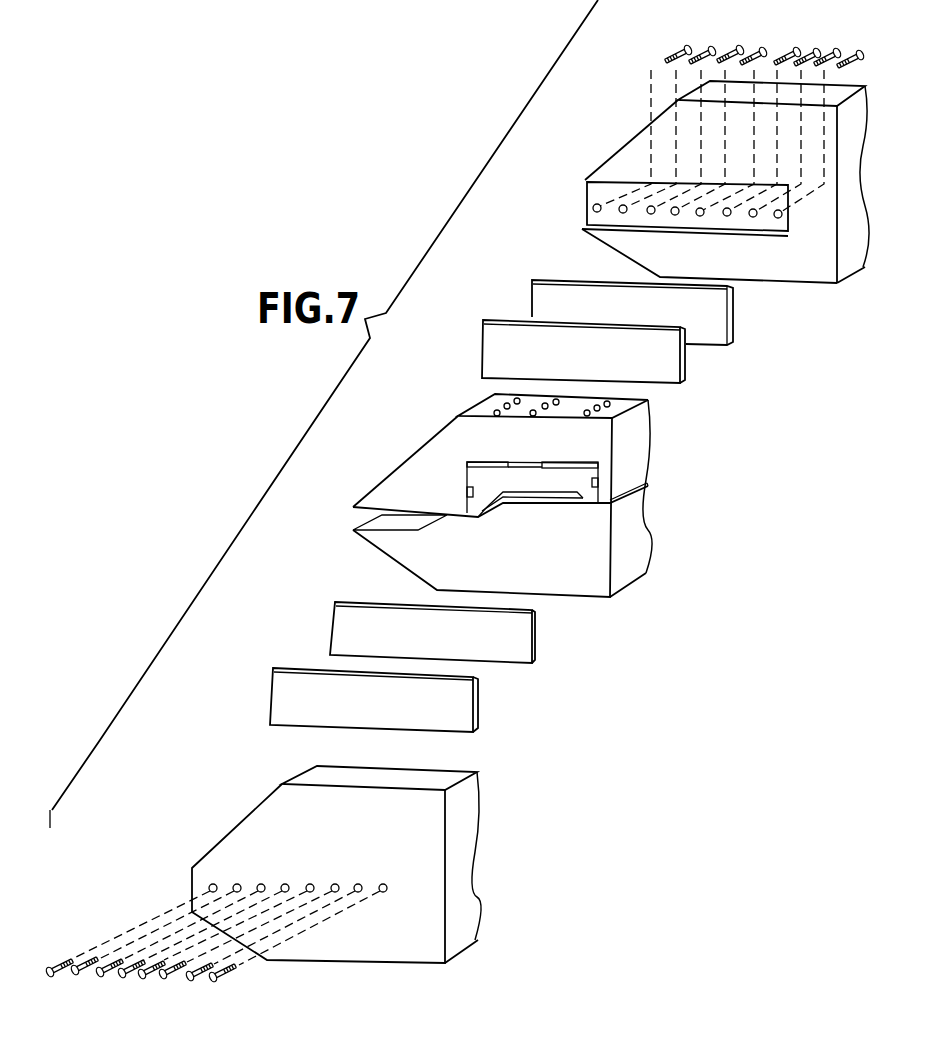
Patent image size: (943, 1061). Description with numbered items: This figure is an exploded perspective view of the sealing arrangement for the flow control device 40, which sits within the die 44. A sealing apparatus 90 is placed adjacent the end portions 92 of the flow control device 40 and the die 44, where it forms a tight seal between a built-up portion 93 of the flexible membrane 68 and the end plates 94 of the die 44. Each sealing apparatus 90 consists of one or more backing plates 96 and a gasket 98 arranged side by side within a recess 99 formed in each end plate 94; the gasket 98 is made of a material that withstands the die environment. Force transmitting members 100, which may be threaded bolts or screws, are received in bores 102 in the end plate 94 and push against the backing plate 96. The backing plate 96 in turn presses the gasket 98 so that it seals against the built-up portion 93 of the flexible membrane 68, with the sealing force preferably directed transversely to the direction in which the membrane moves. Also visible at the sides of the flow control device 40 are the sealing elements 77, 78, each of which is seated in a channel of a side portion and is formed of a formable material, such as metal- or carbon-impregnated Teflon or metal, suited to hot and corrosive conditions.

The flow control device 40 is at (523, 480).
The die 44 is at (488, 452).
The flexible membrane 68 is at (504, 511).
The sealing element 77 is at (466, 492).
The sealing element 78 is at (598, 483).
The sealing apparatus 90 is at (712, 382).
The end portions 92 is at (577, 500).
The built-up portion 93 is at (548, 500).
The end plate 94 is at (822, 258).
The backing plate 96 is at (718, 318).
The gasket 98 is at (670, 367).
The recess 99 is at (602, 188).
The force transmitting members 100 is at (690, 47).
The bores 102 is at (600, 211).